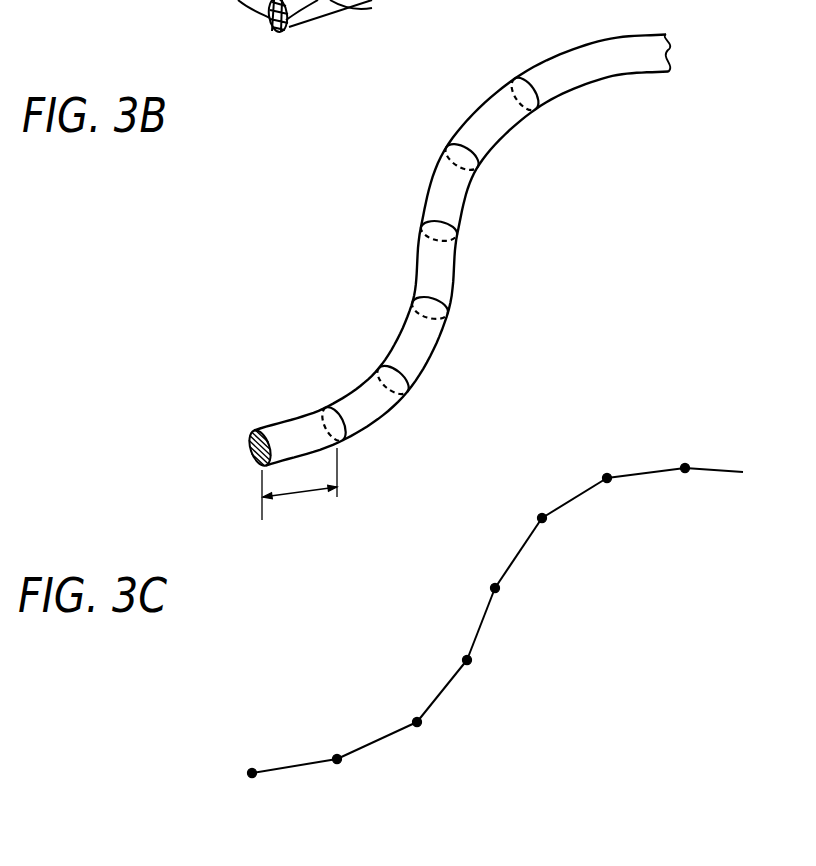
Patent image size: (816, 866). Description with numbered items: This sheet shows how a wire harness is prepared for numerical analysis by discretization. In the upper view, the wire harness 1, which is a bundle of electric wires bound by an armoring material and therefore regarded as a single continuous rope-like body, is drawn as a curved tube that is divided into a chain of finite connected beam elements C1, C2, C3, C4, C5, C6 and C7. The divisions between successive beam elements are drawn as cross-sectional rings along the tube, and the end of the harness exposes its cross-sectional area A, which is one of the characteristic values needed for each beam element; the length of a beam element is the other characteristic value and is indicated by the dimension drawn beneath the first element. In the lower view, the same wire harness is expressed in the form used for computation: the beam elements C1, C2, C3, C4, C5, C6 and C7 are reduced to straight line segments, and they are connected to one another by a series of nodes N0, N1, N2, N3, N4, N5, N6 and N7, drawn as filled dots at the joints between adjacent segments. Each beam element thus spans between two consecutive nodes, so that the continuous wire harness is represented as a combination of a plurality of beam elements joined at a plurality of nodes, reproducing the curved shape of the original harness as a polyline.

In FIG. 3B, the wire harness 1 is at (470, 112).
In FIG. 3B, the cross-sectional area A is at (250, 450).
In FIG. 3B, the beam element C1 is at (297, 428).
In FIG. 3C, the beam element C1 is at (290, 770).
In FIG. 3B, the beam element C2 is at (370, 412).
In FIG. 3C, the beam element C2 is at (375, 745).
In FIG. 3B, the beam element C3 is at (400, 338).
In FIG. 3C, the beam element C3 is at (445, 693).
In FIG. 3B, the beam element C4 is at (445, 275).
In FIG. 3C, the beam element C4 is at (483, 620).
In FIG. 3B, the beam element C5 is at (437, 188).
In FIG. 3C, the beam element C5 is at (520, 553).
In FIG. 3B, the beam element C6 is at (492, 137).
In FIG. 3C, the beam element C6 is at (573, 500).
In FIG. 3B, the beam element C7 is at (557, 72).
In FIG. 3C, the beam element C7 is at (640, 475).
In FIG. 3C, the node N0 is at (249, 768).
In FIG. 3C, the node N1 is at (332, 755).
In FIG. 3C, the node N2 is at (410, 718).
In FIG. 3C, the node N3 is at (462, 657).
In FIG. 3C, the node N4 is at (490, 585).
In FIG. 3C, the node N5 is at (537, 515).
In FIG. 3C, the node N6 is at (602, 477).
In FIG. 3C, the node N7 is at (684, 464).